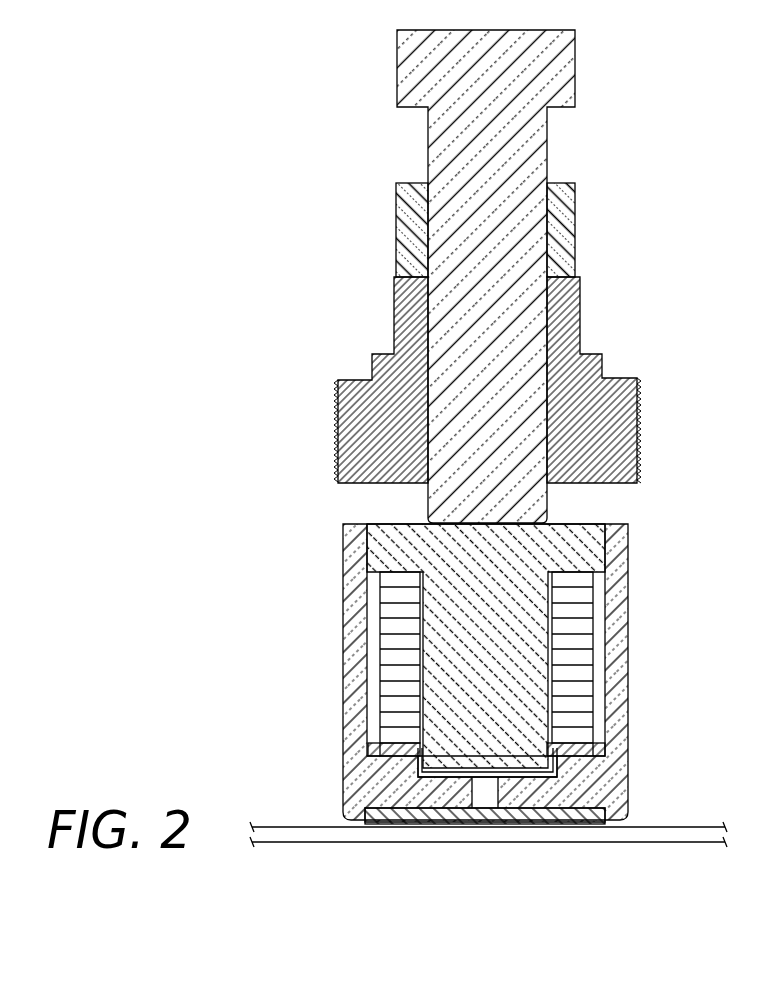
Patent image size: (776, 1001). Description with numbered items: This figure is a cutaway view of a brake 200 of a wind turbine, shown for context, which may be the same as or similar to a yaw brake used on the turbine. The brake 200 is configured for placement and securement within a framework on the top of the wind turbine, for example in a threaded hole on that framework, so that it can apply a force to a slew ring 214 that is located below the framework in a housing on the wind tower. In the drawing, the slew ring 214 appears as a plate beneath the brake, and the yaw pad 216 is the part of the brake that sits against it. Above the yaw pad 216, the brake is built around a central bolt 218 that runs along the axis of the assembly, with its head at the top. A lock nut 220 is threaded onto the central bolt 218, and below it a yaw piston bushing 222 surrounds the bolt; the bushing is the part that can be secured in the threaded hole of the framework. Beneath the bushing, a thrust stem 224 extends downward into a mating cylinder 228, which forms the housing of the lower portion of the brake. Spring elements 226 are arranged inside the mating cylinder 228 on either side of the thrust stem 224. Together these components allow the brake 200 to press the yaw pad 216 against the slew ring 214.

The brake 200 is at (333, 33).
The slew ring 214 is at (648, 827).
The yaw pad 216 is at (393, 830).
The central bolt 218 is at (562, 57).
The lock nut 220 is at (573, 250).
The yaw piston bushing 222 is at (618, 377).
The thrust stem 224 is at (394, 523).
The spring elements 226 is at (521, 664).
The mating cylinder 228 is at (345, 613).